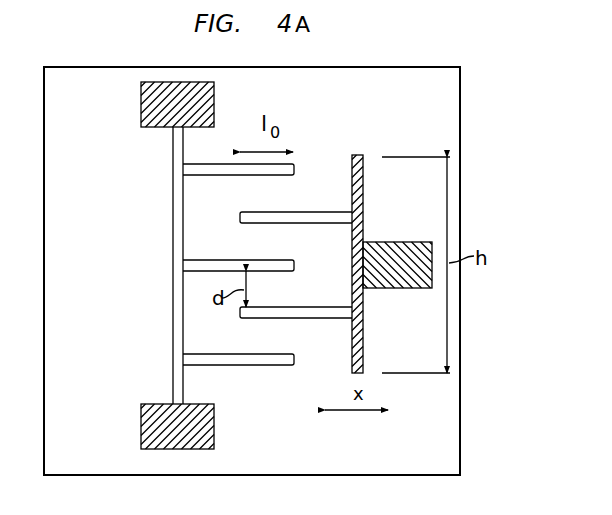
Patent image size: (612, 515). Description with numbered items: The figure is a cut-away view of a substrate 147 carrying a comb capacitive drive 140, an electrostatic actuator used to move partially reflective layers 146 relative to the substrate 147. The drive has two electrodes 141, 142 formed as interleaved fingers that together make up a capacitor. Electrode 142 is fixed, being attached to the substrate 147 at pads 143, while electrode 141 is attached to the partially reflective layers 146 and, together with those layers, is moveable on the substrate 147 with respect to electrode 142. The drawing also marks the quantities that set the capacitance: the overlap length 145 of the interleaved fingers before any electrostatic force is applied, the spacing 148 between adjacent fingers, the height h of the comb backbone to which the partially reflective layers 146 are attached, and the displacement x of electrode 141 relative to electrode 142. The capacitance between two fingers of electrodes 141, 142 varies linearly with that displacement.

The comb capacitive drive 140 is at (312, 461).
The electrode 141 is at (307, 319).
The electrode 142 is at (173, 243).
The pads 143 is at (141, 124).
The overlap length 145 is at (284, 124).
The partially reflective layers 146 is at (392, 242).
The substrate 147 is at (460, 125).
The spacing between the interleaved fingers 148 is at (249, 298).